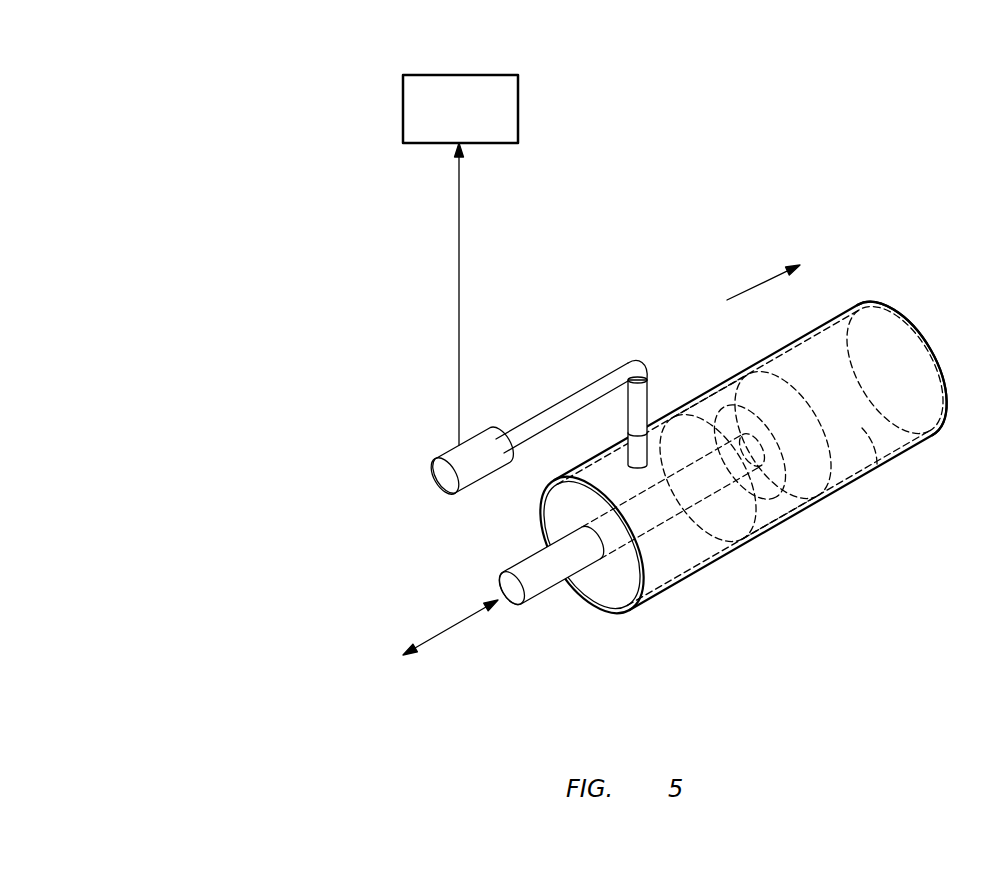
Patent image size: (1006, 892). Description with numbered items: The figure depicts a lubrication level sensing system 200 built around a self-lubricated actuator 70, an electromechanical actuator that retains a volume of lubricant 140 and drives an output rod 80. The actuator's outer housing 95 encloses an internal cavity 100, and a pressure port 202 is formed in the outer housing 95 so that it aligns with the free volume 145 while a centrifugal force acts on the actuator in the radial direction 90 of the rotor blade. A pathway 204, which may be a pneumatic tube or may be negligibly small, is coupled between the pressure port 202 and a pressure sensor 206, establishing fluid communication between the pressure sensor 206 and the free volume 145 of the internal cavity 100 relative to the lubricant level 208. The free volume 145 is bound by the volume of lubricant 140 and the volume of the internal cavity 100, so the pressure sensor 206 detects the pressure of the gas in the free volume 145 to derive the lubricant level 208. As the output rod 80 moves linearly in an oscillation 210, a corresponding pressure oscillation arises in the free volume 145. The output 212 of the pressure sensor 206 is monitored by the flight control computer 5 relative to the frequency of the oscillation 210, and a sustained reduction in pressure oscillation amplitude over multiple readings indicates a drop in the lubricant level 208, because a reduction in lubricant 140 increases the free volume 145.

The flight control computer 5 is at (470, 117).
The self-lubricated actuator 70 is at (912, 306).
The output rod 80 is at (544, 588).
The radial direction 90 is at (770, 258).
The outer housing 95 is at (934, 448).
The internal cavity 100 is at (731, 530).
The volume of lubricant 140 is at (873, 437).
The free volume 145 is at (707, 552).
The lubrication level sensing system 200 is at (242, 407).
The pressure port 202 is at (637, 482).
The pathway 204 is at (563, 393).
The pressure sensor 206 is at (443, 474).
The lubricant level 208 is at (766, 522).
The oscillation 210 is at (450, 632).
The output 212 is at (459, 245).